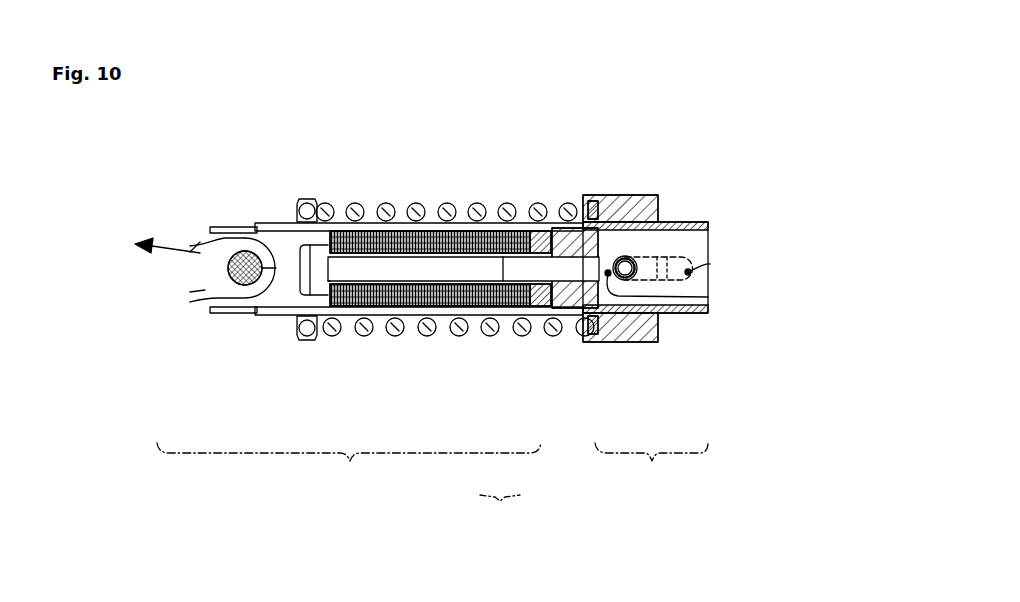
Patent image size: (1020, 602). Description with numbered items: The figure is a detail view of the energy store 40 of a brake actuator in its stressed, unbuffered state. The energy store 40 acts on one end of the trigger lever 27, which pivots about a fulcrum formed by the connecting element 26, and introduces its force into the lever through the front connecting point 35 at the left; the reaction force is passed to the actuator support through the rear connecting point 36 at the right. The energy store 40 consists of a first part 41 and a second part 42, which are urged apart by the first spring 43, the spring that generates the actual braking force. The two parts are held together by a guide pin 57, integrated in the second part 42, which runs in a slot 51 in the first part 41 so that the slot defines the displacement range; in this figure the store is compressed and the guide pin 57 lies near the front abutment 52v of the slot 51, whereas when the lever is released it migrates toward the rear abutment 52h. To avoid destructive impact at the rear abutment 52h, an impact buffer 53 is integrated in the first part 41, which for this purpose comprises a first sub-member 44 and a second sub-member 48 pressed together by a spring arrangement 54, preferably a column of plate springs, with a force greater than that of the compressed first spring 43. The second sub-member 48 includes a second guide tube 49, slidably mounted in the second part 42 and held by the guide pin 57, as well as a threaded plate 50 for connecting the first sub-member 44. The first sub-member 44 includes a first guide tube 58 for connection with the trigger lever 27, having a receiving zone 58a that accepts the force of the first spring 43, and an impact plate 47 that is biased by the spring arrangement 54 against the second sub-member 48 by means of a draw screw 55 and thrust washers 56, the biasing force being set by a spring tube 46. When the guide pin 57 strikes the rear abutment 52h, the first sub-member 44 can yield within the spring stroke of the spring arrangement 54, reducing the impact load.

The connecting element 26 is at (139, 245).
The trigger lever 27 is at (200, 275).
The front connecting point 35 is at (255, 223).
The rear connecting point 36 is at (611, 226).
The energy store 40 is at (97, 185).
The first part 41 is at (500, 516).
The second part 42 is at (650, 195).
The first spring 43 is at (390, 203).
The first sub-member 44 is at (355, 495).
The spring tube 46 is at (383, 337).
The impact plate 47 is at (540, 312).
The second sub-member 48 is at (670, 485).
The second guide tube 49 is at (675, 343).
The threaded plate 50 is at (565, 316).
The slot 51 is at (668, 258).
The rear abutment 52h is at (710, 264).
The front abutment 52v is at (708, 297).
The impact buffer 53 is at (148, 197).
The spring arrangement 54 is at (445, 318).
The draw screw 55 is at (302, 293).
The thrust washers 56 is at (362, 306).
The guide pin 57 is at (613, 228).
The first guide tube 58 is at (263, 320).
The receiving zone 58a is at (297, 217).